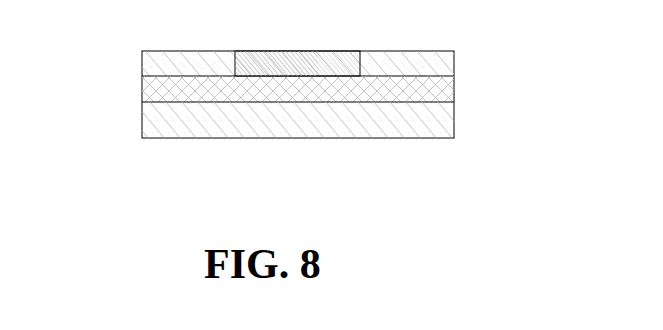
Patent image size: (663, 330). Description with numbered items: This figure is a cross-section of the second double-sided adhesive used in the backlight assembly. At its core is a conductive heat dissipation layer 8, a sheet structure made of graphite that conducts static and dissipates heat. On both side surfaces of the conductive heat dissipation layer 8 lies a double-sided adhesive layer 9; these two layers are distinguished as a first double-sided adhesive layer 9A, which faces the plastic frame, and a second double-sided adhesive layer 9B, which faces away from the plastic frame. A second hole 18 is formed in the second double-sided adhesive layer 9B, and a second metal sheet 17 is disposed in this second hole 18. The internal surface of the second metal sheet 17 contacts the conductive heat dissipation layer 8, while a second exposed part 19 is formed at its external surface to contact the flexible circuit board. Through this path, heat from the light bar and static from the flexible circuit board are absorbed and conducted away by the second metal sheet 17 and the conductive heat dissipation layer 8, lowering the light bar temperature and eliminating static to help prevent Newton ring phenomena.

The conductive heat dissipation layer 8 is at (455, 84).
The double-sided adhesive layer 9 is at (263, 88).
The first double-sided adhesive layer 9A is at (142, 120).
The second double-sided adhesive layer 9B is at (142, 62).
The second metal sheet 17 is at (297, 40).
The second hole 18 is at (247, 59).
The second exposed part 19 is at (293, 50).